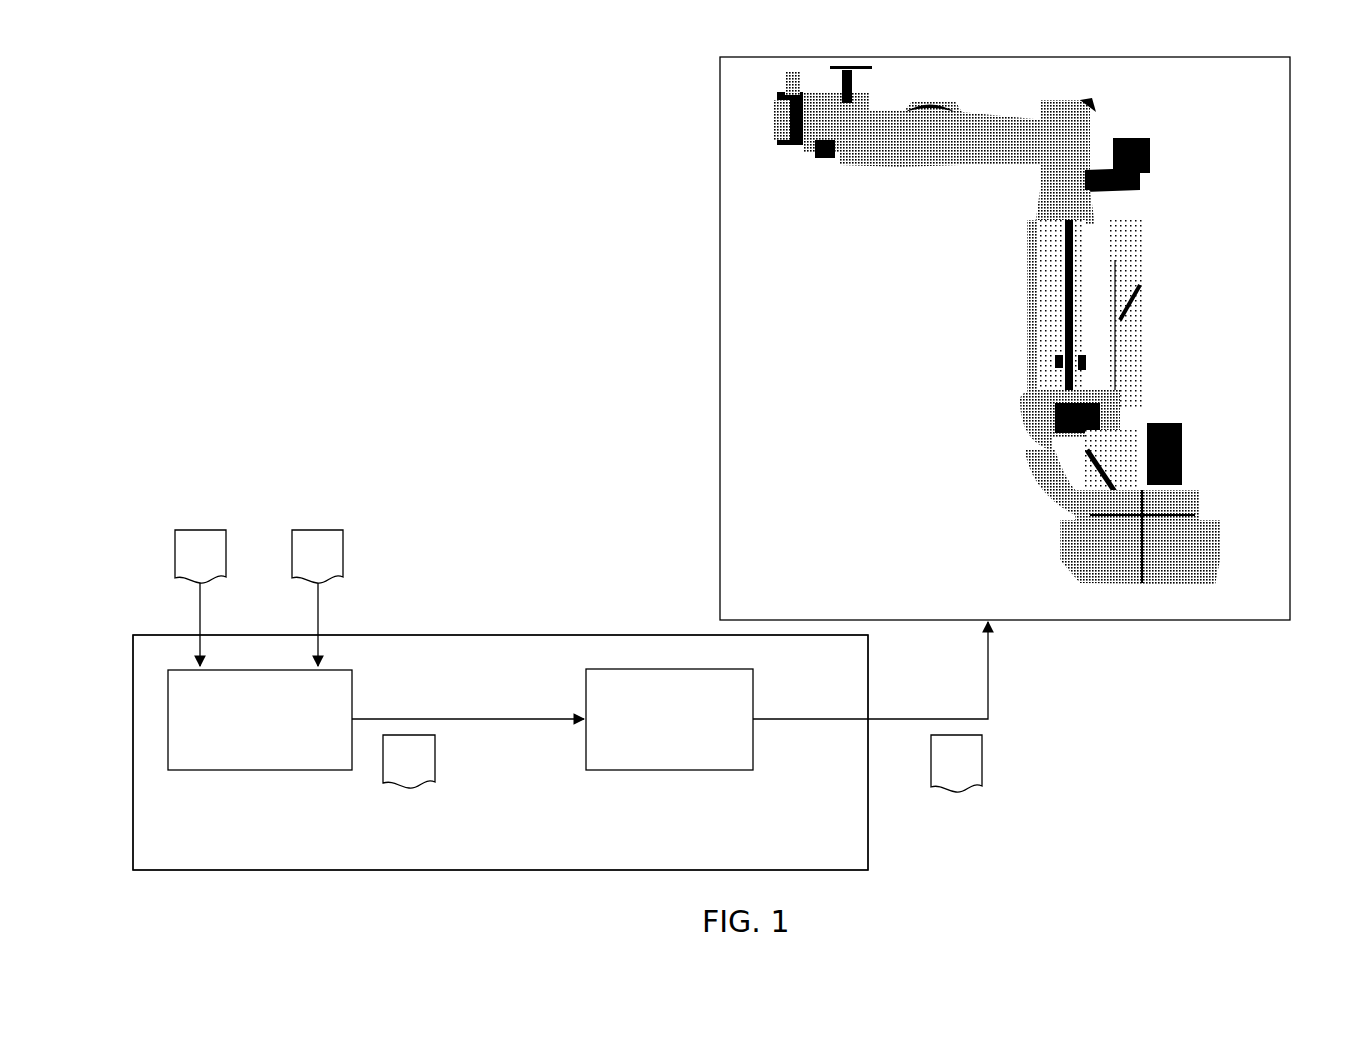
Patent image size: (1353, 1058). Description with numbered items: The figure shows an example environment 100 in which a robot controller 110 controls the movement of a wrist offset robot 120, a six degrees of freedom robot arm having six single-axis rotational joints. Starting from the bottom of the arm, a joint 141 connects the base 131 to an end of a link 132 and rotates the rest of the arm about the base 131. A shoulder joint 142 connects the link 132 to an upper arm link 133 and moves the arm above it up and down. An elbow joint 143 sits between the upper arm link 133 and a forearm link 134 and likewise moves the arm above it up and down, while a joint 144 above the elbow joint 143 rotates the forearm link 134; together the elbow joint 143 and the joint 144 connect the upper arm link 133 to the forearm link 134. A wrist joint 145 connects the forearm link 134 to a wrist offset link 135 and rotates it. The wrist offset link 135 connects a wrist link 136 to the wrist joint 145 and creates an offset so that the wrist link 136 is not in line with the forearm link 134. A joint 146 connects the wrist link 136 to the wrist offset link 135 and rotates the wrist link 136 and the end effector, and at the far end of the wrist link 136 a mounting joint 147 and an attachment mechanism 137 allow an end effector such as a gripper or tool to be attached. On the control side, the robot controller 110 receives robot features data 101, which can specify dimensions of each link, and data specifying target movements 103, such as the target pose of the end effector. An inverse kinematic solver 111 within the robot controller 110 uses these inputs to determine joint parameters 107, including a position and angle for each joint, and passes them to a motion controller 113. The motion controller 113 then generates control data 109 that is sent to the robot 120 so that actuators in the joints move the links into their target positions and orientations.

The environment 100 is at (183, 130).
The robot features data 101 is at (184, 515).
The data specifying target movements 103 is at (306, 515).
The joint parameters 107 is at (372, 800).
The control data 109 is at (950, 802).
The robot controller 110 is at (500, 752).
The inverse kinematic solver 111 is at (260, 720).
The motion controller 113 is at (669, 719).
The wrist offset robot 120 is at (981, 344).
The base 131 is at (1220, 581).
The link 132 is at (1036, 488).
The upper arm link 133 is at (1010, 300).
The forearm link 134 is at (980, 117).
The wrist offset link 135 is at (808, 141).
The wrist link 136 is at (802, 90).
The attachment mechanism 137 is at (778, 82).
The joint 141 is at (1070, 516).
The shoulder joint 142 is at (1050, 438).
The elbow joint 143 is at (1046, 198).
The joint 144 is at (1046, 151).
The wrist joint 145 is at (827, 153).
The joint 146 is at (832, 87).
The mounting joint 147 is at (771, 118).